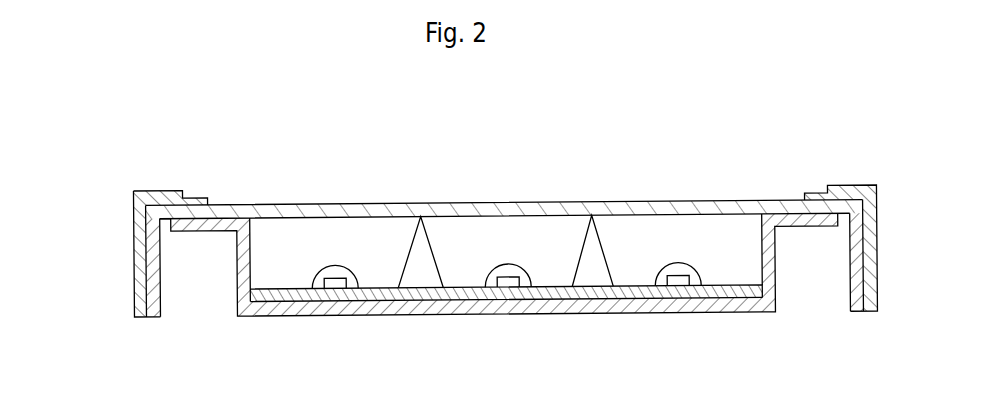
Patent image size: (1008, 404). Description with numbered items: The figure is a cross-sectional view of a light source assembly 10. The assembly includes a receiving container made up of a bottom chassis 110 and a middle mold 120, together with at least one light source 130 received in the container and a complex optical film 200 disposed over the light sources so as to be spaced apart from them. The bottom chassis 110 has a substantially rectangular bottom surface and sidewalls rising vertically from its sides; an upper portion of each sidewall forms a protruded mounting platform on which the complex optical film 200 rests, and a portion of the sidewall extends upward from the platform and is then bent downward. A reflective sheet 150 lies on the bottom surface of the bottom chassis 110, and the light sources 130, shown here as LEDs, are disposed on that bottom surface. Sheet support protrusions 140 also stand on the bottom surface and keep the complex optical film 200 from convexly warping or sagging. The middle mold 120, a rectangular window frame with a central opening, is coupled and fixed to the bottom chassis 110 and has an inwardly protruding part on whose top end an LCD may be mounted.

The light source assembly 10 is at (607, 94).
The bottom chassis 110 is at (255, 310).
The middle mold 120 is at (133, 287).
The light source 130 is at (337, 286).
The sheet support protrusion 140 is at (428, 274).
The reflective sheet 150 is at (543, 300).
The complex optical film 200 is at (515, 202).